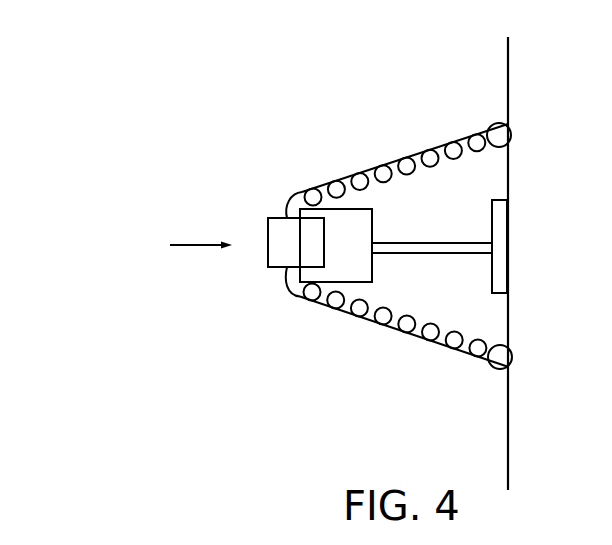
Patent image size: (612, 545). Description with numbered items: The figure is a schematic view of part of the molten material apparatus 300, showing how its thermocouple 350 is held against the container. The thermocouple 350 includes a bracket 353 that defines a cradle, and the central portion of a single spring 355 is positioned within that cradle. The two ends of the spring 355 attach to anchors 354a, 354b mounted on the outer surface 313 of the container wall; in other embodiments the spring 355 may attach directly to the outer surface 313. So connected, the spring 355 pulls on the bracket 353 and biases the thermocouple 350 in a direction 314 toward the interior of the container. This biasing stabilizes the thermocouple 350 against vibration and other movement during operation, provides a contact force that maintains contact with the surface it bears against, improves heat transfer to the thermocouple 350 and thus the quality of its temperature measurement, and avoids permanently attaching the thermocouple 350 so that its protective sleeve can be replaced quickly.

The molten material apparatus 300 is at (282, 263).
The outer surface of the wall 313 is at (445, 263).
The direction 314 is at (188, 245).
The thermocouple 350 is at (445, 249).
The bracket 353 is at (277, 237).
The anchor 354a is at (498, 373).
The anchor 354b is at (503, 122).
The spring 355 is at (347, 318).